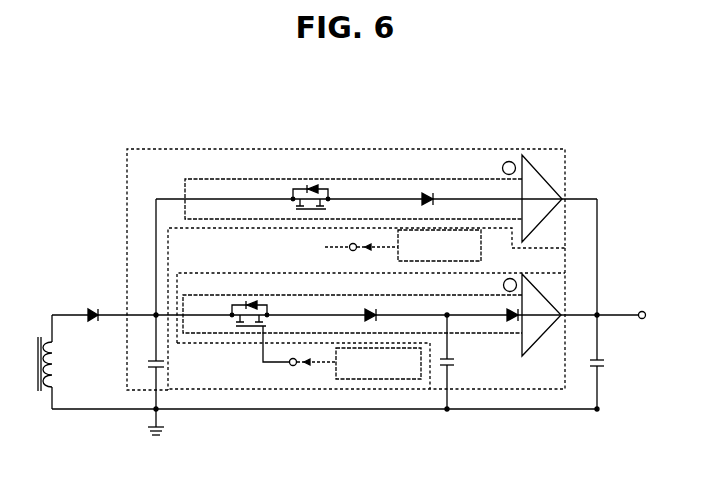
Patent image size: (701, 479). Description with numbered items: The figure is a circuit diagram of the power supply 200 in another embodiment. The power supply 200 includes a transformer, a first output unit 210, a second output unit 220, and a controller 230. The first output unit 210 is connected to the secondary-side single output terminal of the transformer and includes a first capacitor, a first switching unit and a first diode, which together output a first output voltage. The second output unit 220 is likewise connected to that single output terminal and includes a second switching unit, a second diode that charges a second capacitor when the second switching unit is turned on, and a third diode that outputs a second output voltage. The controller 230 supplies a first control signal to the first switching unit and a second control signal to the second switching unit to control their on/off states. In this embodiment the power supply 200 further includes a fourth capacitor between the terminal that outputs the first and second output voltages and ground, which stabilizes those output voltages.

The power supply 200 is at (67, 120).
The first output unit 210 is at (127, 238).
The second output unit 220 is at (505, 392).
The controller 230 is at (482, 246).